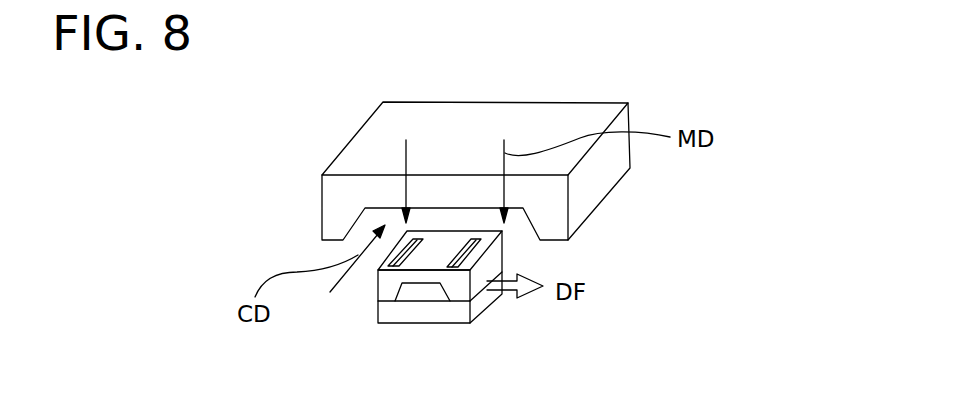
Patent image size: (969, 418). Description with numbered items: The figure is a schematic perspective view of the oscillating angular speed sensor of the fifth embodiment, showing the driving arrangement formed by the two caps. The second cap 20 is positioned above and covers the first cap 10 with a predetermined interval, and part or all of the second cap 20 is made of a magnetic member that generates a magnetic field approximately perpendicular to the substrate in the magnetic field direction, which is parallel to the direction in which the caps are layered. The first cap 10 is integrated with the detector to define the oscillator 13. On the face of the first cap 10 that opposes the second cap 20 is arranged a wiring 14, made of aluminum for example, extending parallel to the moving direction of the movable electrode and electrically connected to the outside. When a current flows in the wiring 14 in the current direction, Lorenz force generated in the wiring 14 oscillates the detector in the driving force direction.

The first cap 10 is at (458, 288).
The oscillator 13 is at (400, 328).
The wiring 14 is at (468, 250).
The second cap 20 is at (595, 117).